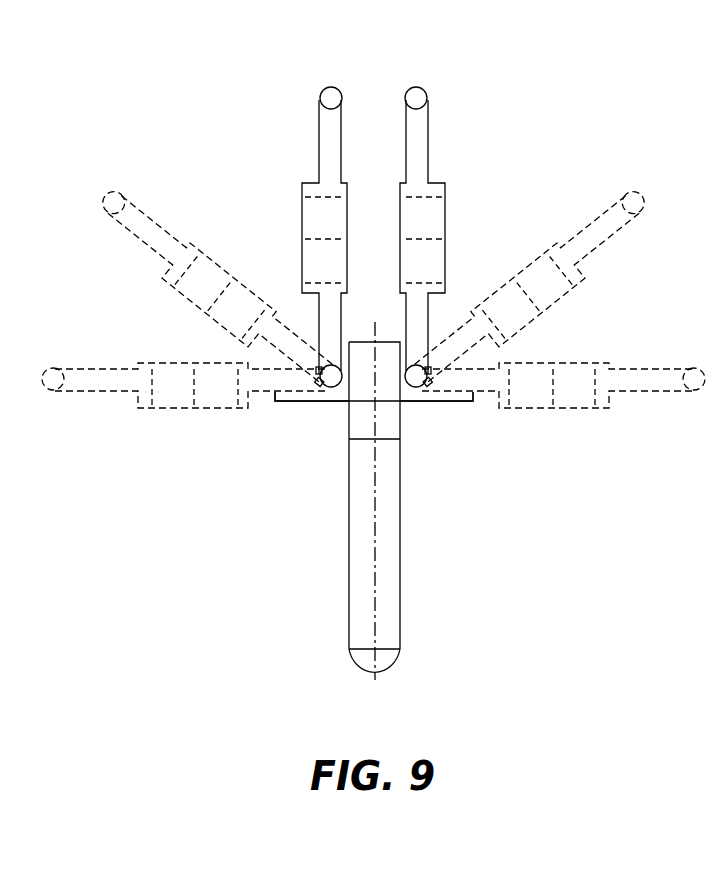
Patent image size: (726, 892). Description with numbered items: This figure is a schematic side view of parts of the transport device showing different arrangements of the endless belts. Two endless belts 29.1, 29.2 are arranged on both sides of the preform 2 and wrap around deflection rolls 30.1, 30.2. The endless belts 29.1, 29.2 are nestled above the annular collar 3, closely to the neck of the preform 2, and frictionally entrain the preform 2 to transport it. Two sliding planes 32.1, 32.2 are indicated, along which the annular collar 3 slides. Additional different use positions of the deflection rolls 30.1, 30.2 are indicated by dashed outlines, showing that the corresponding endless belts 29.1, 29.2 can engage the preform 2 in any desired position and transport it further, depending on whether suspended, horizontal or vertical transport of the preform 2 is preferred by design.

The preform 2 is at (413, 596).
The annular collar 3 is at (403, 392).
The endless belt 29.1 is at (327, 93).
The endless belt 29.2 is at (420, 93).
The deflection roll 30.1 is at (307, 138).
The deflection roll 30.2 is at (440, 137).
The sliding plane 32.1 is at (288, 394).
The sliding plane 32.2 is at (445, 392).